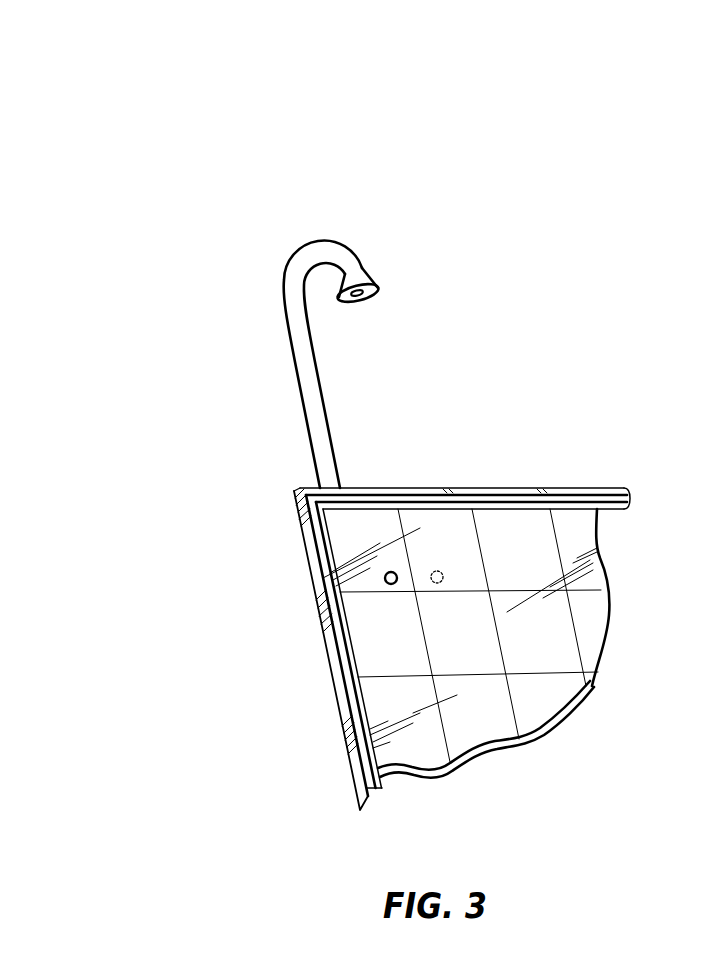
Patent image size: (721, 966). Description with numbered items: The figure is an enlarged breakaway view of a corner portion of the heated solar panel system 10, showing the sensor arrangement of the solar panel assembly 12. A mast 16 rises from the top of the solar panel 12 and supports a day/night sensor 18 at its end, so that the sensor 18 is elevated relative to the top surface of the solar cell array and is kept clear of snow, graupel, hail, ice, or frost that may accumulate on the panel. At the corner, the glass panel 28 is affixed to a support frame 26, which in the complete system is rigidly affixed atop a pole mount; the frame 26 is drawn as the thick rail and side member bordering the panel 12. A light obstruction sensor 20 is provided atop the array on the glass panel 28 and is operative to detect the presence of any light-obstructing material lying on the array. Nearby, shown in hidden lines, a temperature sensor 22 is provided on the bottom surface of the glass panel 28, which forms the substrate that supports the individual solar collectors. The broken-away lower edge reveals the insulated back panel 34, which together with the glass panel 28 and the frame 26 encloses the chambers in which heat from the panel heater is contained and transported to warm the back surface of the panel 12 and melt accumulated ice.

The heated solar panel system 10 is at (100, 148).
The solar panel assembly 12 is at (289, 470).
The mast 16 is at (318, 240).
The day/night sensor 18 is at (366, 303).
The light obstruction sensor 20 is at (384, 578).
The temperature sensor 22 is at (444, 575).
The support frame 26 is at (345, 699).
The glass panel 28 is at (409, 771).
The insulated back panel 34 is at (541, 741).